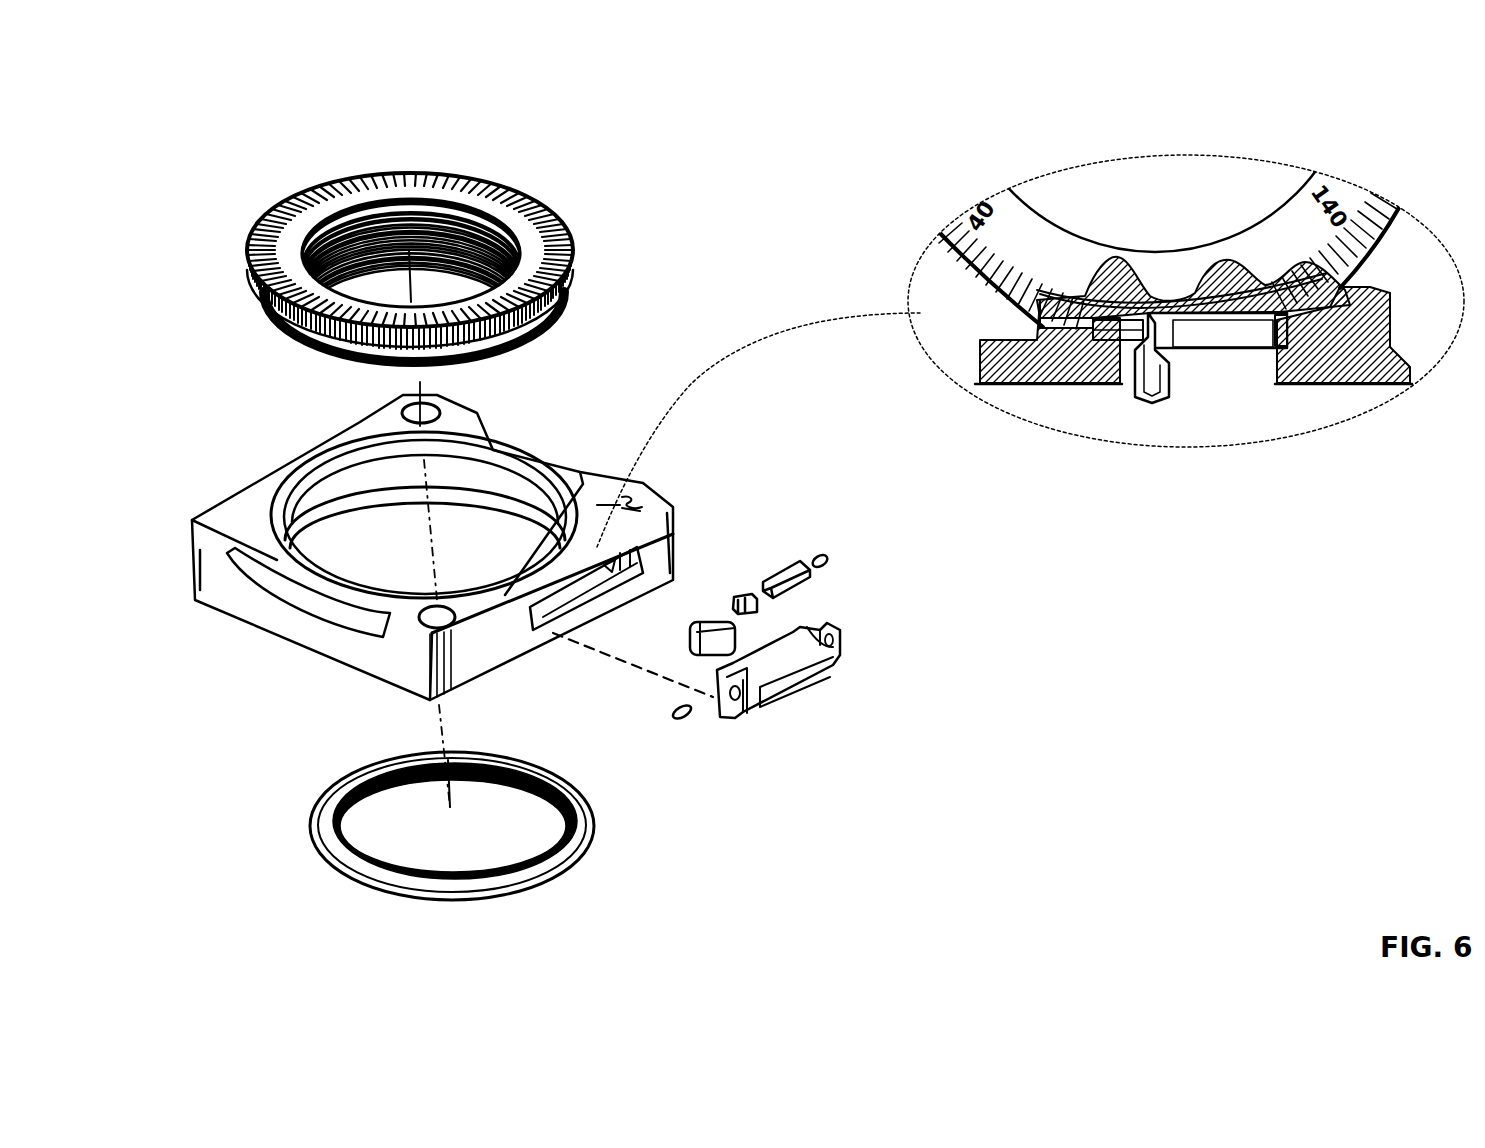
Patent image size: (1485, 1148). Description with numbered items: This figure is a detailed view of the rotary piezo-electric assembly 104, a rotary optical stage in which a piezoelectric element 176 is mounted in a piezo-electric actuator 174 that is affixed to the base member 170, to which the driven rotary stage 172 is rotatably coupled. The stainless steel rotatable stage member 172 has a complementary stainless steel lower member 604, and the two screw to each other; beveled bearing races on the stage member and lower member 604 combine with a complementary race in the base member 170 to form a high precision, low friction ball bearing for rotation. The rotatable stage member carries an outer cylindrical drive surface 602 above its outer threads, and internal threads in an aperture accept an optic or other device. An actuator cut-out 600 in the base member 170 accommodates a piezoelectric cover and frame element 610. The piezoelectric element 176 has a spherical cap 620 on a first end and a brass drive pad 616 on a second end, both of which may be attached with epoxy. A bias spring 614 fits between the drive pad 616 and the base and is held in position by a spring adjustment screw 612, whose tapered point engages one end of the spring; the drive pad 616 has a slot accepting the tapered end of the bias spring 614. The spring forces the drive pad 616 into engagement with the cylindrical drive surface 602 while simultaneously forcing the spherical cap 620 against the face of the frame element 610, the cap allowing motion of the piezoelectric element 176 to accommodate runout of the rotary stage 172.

The rotary piezo-electric assembly 104 is at (718, 238).
The base member 170 is at (233, 597).
The rotary stage 172 is at (573, 243).
The piezo-electric actuator 174 is at (865, 572).
The piezoelectric element 176 is at (773, 562).
The actuator cut-out 600 is at (600, 552).
The outer cylindrical drive surface 602 is at (530, 322).
The lower member 604 is at (590, 807).
The piezoelectric cover and frame element 610 is at (833, 667).
The spring adjustment screw 612 is at (670, 712).
The bias spring 614 is at (708, 620).
The drive pad 616 is at (747, 593).
The spherical cap 620 is at (818, 553).